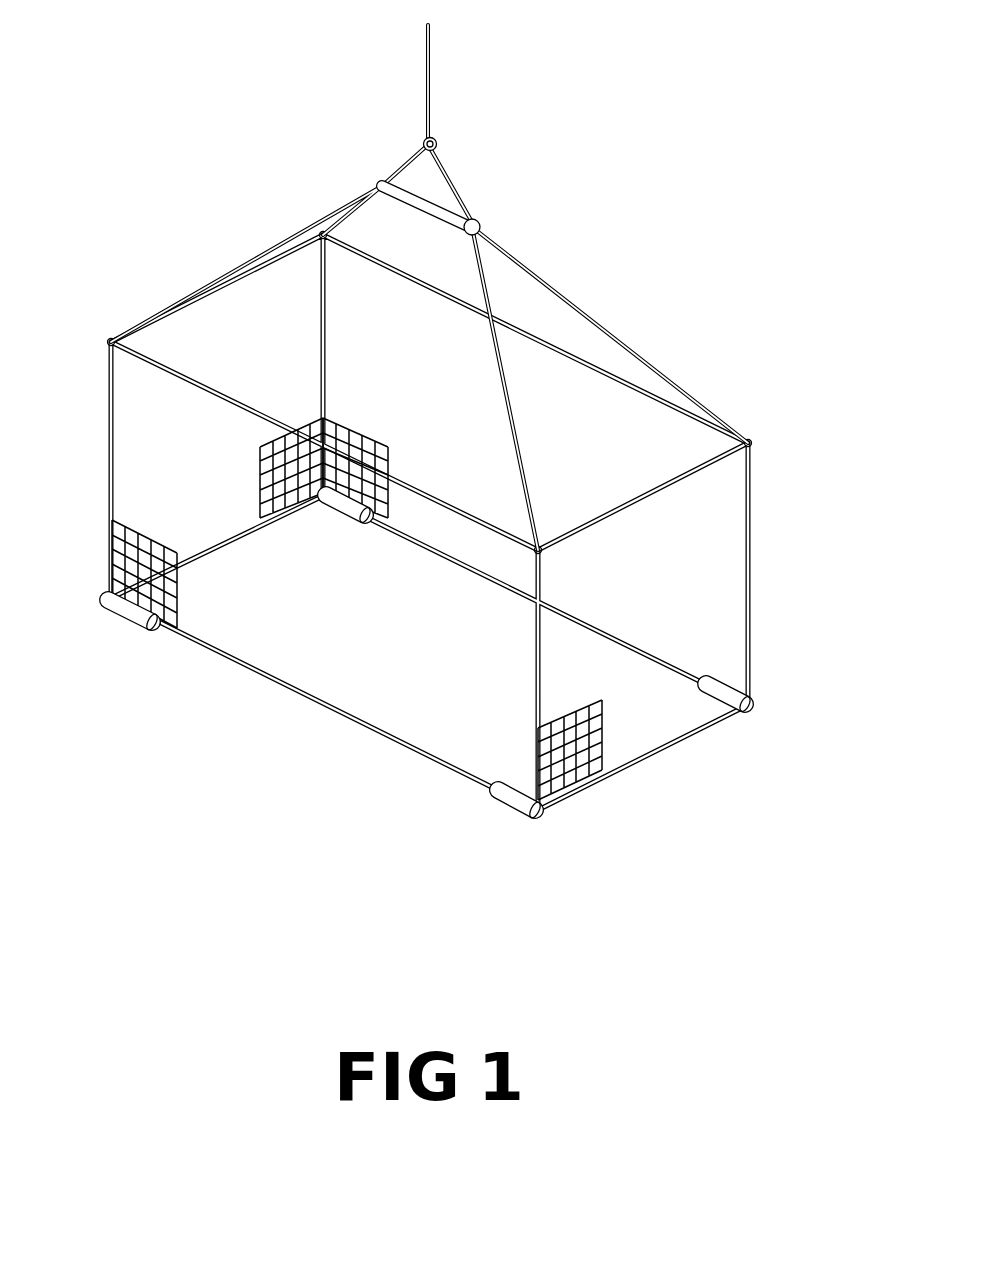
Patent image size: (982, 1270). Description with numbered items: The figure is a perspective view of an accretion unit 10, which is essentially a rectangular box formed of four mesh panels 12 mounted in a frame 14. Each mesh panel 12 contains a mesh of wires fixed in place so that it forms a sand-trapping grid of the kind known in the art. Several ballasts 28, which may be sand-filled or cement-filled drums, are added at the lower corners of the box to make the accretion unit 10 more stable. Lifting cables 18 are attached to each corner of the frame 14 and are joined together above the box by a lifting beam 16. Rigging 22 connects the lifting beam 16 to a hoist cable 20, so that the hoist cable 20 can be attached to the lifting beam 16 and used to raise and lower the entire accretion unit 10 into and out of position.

The accretion unit 10 is at (454, 461).
The mesh panel 12 is at (708, 600).
The frame 14 is at (540, 667).
The lifting beam 16 is at (440, 217).
The lifting cables 18 is at (620, 340).
The hoist cable 20 is at (430, 83).
The rigging 22 is at (450, 173).
The ballasts 28 is at (143, 620).